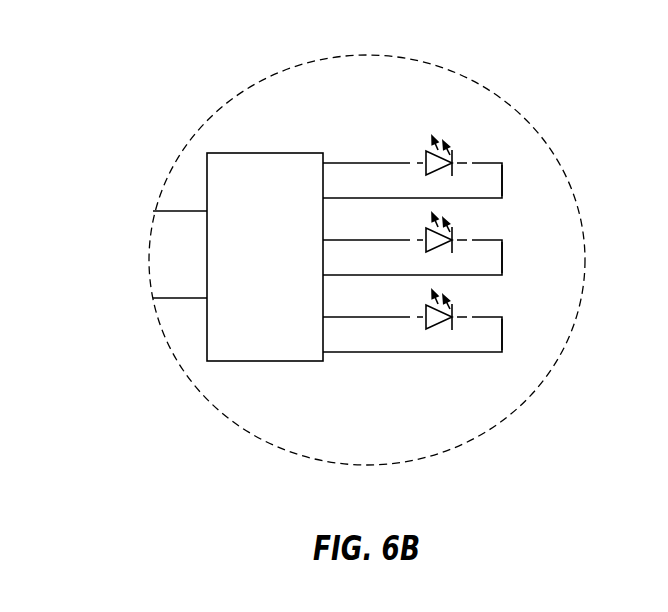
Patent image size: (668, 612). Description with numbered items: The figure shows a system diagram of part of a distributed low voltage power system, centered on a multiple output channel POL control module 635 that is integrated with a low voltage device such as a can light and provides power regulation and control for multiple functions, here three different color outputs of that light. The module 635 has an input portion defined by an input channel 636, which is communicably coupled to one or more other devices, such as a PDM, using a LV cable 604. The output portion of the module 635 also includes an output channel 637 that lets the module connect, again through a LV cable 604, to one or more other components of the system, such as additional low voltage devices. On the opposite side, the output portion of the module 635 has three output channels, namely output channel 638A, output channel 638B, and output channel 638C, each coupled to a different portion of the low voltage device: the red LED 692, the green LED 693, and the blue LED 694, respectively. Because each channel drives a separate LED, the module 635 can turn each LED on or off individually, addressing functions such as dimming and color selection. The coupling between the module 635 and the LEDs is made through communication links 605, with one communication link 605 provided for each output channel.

The multiple output channel POL control module 635 is at (288, 270).
The LV cable 604 is at (170, 211).
The output channel 637 is at (207, 213).
The input channel 636 is at (207, 300).
The output channel 638A is at (323, 198).
The output channel 638B is at (323, 240).
The output channel 638C is at (323, 317).
The red LED 692 is at (453, 152).
The green LED 693 is at (453, 231).
The blue LED 694 is at (453, 307).
The communication link 605 is at (503, 190).